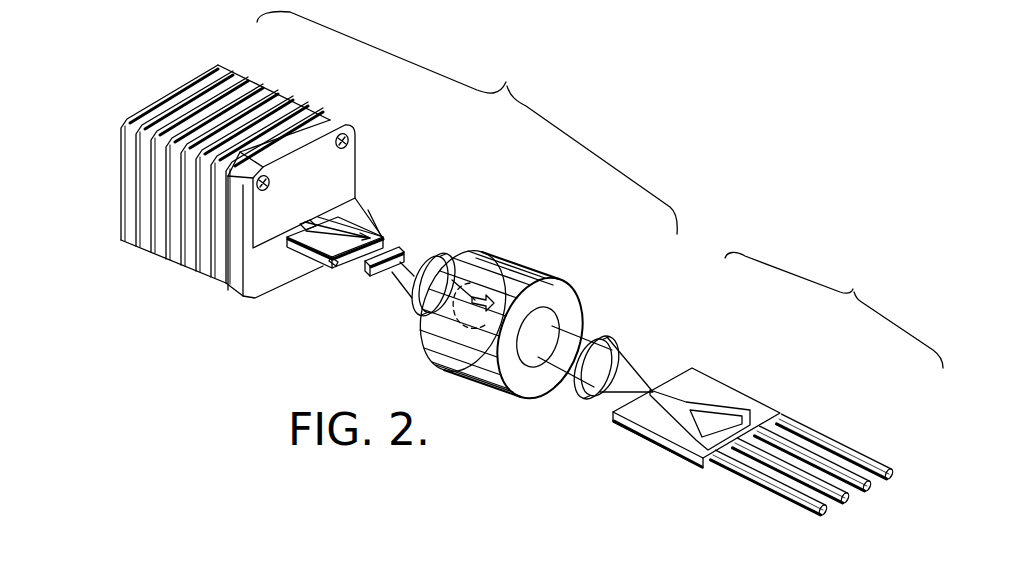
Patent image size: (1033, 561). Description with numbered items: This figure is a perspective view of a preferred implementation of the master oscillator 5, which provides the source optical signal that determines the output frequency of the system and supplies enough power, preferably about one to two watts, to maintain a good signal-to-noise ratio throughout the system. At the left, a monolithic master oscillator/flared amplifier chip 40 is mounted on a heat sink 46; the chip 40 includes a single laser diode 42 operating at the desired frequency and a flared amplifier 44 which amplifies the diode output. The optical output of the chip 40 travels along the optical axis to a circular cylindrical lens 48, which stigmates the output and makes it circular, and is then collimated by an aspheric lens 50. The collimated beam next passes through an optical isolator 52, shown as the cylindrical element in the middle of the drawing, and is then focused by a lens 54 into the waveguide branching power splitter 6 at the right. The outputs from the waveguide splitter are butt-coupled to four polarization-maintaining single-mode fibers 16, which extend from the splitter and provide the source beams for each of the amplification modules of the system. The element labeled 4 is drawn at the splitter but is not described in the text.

The optical waveguide splitter chip 4 is at (714, 380).
The master oscillator 5 is at (467, 122).
The waveguide branching power splitter 6 is at (834, 310).
The polarization-maintaining single-mode fibers 16 is at (806, 440).
The monolithic master oscillator/flared amplifier chip 40 is at (322, 222).
The laser diode 42 is at (312, 223).
The flared amplifier 44 is at (336, 263).
The heat sink 46 is at (301, 110).
The circular cylindrical lens 48 is at (401, 252).
The aspheric lens 50 is at (437, 258).
The optical isolator 52 is at (522, 263).
The lens 54 is at (600, 340).